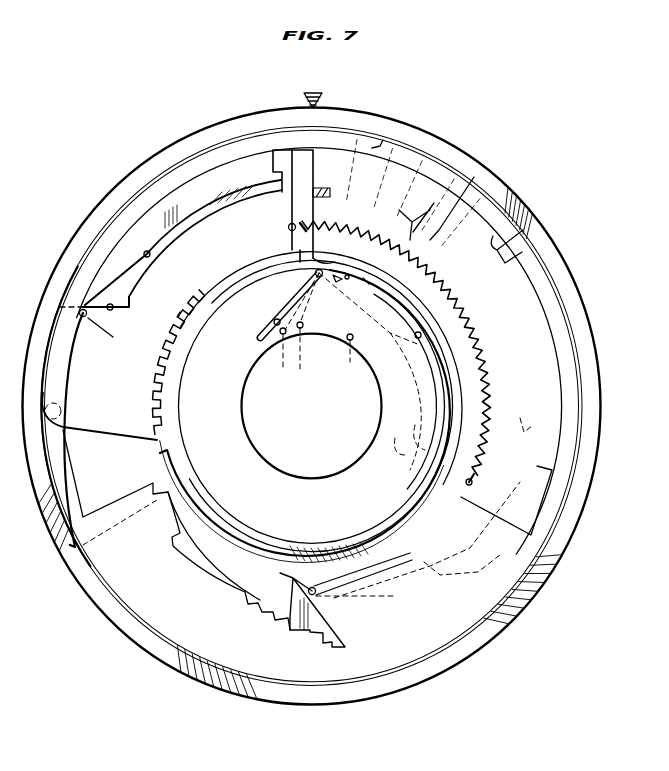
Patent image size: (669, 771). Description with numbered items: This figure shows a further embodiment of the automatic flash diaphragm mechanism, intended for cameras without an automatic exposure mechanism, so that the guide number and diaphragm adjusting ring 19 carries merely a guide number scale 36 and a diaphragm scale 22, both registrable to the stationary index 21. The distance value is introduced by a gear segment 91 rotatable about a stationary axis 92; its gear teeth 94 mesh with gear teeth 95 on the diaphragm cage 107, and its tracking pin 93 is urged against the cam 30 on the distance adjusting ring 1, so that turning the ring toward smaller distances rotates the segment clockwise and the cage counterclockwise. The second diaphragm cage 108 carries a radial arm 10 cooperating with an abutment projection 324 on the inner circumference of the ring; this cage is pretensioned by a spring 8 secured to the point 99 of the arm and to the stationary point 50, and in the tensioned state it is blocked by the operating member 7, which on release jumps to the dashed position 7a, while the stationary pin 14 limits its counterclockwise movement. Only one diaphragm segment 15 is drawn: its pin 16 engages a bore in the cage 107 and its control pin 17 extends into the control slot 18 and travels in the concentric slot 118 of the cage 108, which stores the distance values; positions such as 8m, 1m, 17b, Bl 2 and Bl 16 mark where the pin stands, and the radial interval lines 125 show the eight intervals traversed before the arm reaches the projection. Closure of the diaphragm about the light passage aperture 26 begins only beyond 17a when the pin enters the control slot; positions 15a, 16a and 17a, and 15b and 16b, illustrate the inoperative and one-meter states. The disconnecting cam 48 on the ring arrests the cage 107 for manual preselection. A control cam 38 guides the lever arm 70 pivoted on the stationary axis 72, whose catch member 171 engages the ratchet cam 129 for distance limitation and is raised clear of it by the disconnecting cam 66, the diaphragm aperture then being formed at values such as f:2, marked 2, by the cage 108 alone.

The distance adjusting ring 1 is at (563, 306).
The diaphragm aperture value f: 2 is at (385, 140).
The operating member 7 is at (322, 188).
The released position of operating member 7a is at (530, 420).
The spring 8 is at (470, 320).
The 8 m distance position of control pin 8m is at (419, 340).
The radial arm 10 is at (298, 162).
The stationary pin 14 is at (288, 227).
The diaphragm segment 15 is at (440, 422).
The inoperative position of diaphragm segment 15a is at (283, 368).
The position of diaphragm segment at 1 m 15b is at (316, 359).
The pin 16 is at (350, 341).
The position of pin 16 in inoperative state 16a is at (282, 335).
The position of pin 16 at 1 m 16b is at (300, 329).
The control pin 17 is at (428, 314).
The f:2 position of control pin 17a is at (315, 258).
The 1 m position of control pin 17b is at (337, 282).
The control slot 18 is at (303, 291).
The guide number and diaphragm adjusting ring 19 is at (558, 270).
The stationary index 21 is at (305, 95).
The diaphragm scale 22 is at (432, 140).
The light passage aperture 26 is at (288, 463).
The cam 30 is at (145, 252).
The guide number scale 36 is at (246, 122).
The control cam 38 is at (389, 600).
The disconnecting cam 48 is at (110, 303).
The stationary point 50 is at (474, 482).
The disconnecting cam 66 is at (290, 582).
The lever arm 70 is at (430, 586).
The stationary axis 72 is at (452, 553).
The gear segment 91 is at (109, 327).
The stationary axis 92 is at (64, 428).
The tracking pin 93 is at (83, 308).
The gear teeth 94 is at (158, 350).
The gear teeth 95 is at (177, 317).
The point of arm 99 is at (302, 226).
The diaphragm cage 107 is at (245, 270).
The diaphragm cage 108 is at (227, 302).
The concentric slot 118 is at (366, 283).
The radial interval lines 125 is at (436, 208).
The ratchet cam 129 is at (250, 605).
The catch member 171 is at (313, 587).
The abutment projection 324 is at (485, 239).
The f:2 position at end of slot Bl 2 is at (315, 273).
The f:16 position in control slot Bl 16 is at (274, 320).
The 1 m distance position 1m is at (348, 280).